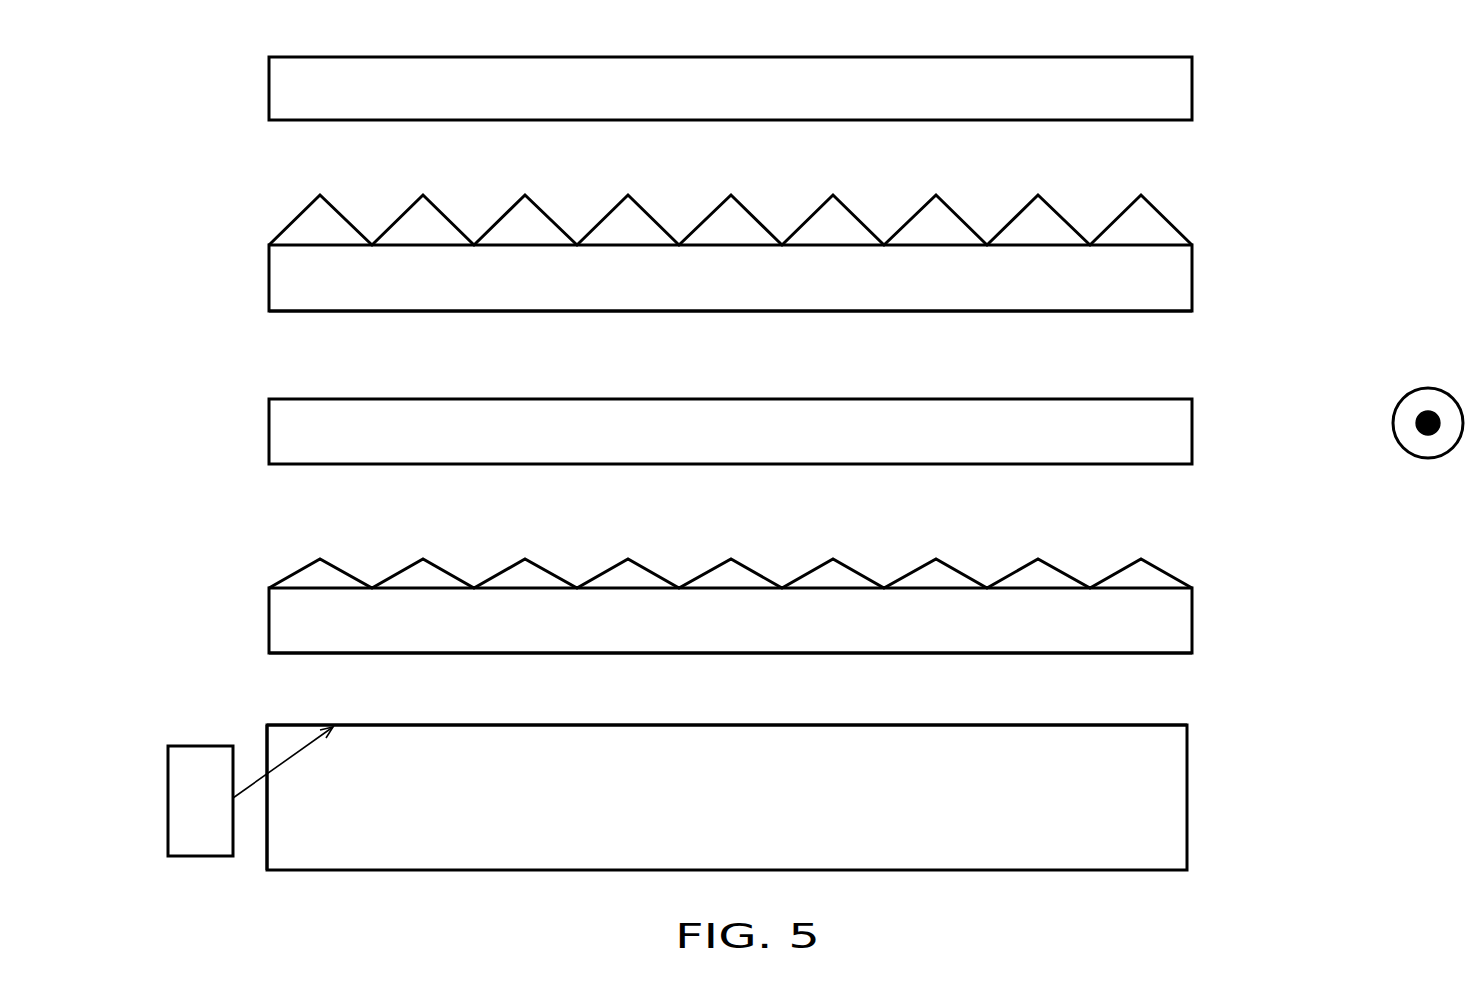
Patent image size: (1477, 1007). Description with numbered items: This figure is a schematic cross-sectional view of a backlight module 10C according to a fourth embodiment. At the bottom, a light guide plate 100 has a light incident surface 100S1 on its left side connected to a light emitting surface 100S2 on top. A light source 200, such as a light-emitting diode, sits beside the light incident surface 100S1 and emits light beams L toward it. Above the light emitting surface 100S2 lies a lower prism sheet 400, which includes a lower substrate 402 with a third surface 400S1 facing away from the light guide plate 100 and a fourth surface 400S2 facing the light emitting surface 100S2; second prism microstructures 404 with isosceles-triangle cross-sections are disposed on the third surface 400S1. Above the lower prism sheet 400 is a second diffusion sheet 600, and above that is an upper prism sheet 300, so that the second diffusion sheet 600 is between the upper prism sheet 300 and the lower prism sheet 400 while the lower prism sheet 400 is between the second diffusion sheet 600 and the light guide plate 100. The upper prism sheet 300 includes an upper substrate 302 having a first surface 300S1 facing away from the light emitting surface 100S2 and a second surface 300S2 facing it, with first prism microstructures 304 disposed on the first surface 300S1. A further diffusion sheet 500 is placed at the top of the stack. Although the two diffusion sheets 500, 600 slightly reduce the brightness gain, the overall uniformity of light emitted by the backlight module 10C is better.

The backlight module 10C is at (1395, 914).
The light guide plate 100 is at (772, 796).
The light incident surface 100S1 is at (281, 828).
The light emitting surface 100S2 is at (1140, 723).
The light source 200 is at (168, 798).
The light beams L is at (285, 763).
The upper prism sheet 300 is at (752, 278).
The upper substrate 302 is at (718, 306).
The first prism microstructures 304 is at (720, 239).
The first surface 300S1 is at (320, 230).
The second surface 300S2 is at (320, 313).
The lower prism sheet 400 is at (752, 621).
The lower substrate 402 is at (718, 650).
The second prism microstructures 404 is at (720, 585).
The third surface 400S1 is at (320, 574).
The fourth surface 400S2 is at (320, 655).
The diffusion sheet 500 is at (1186, 89).
The second diffusion sheet 600 is at (1186, 432).